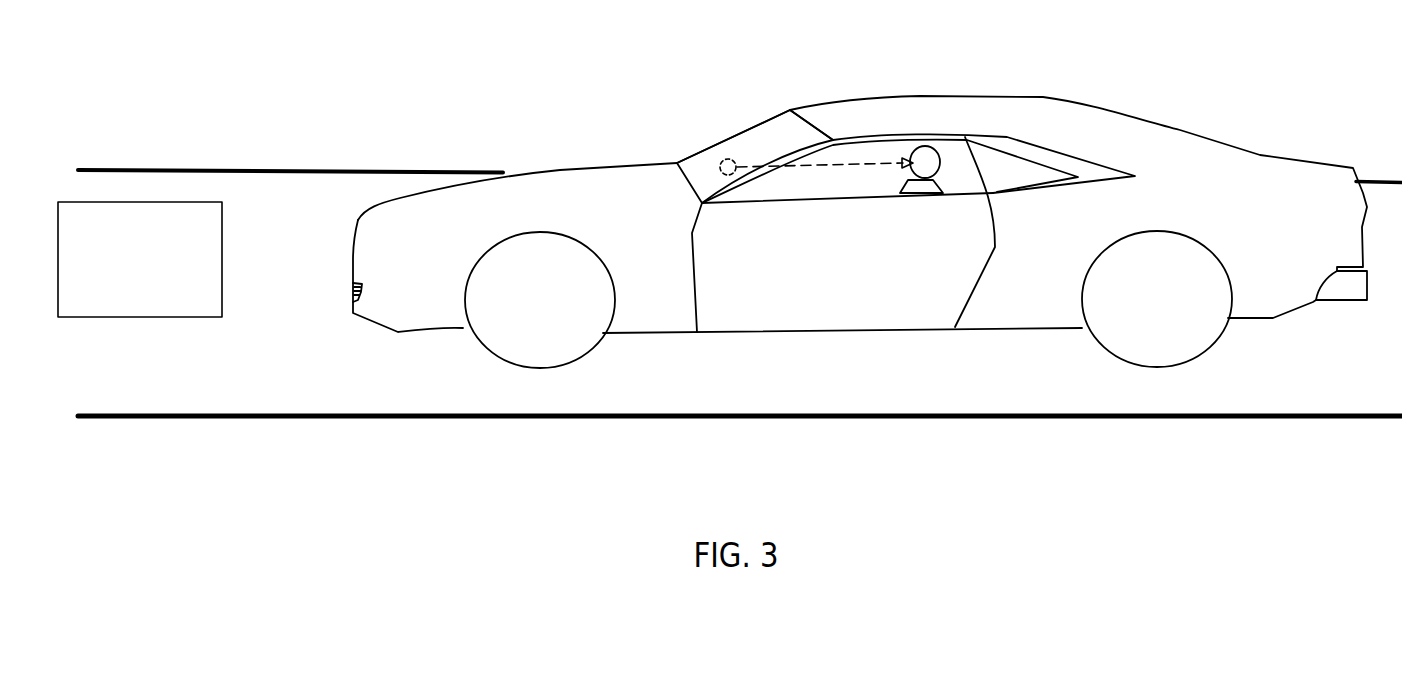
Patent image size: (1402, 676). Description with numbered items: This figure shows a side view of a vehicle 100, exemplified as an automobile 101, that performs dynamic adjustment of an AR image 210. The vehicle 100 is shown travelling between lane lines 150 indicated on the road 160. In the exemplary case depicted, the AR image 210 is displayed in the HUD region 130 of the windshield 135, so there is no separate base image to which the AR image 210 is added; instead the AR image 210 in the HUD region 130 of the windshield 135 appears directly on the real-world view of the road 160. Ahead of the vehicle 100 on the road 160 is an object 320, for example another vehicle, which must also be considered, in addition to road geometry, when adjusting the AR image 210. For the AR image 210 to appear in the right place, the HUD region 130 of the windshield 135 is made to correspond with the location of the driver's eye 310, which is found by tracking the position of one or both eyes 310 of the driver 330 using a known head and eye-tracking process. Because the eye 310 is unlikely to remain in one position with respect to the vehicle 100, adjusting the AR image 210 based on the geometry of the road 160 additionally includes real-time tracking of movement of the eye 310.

The vehicle 100 is at (860, 196).
The automobile 101 is at (1345, 167).
The HUD region 130 is at (732, 155).
The windshield 135 is at (772, 128).
The lane lines 150 is at (287, 412).
The road 160 is at (1299, 381).
The AR image 210 is at (721, 166).
The driver's eye 310 is at (913, 163).
The object 320 is at (112, 281).
The driver 330 is at (940, 152).